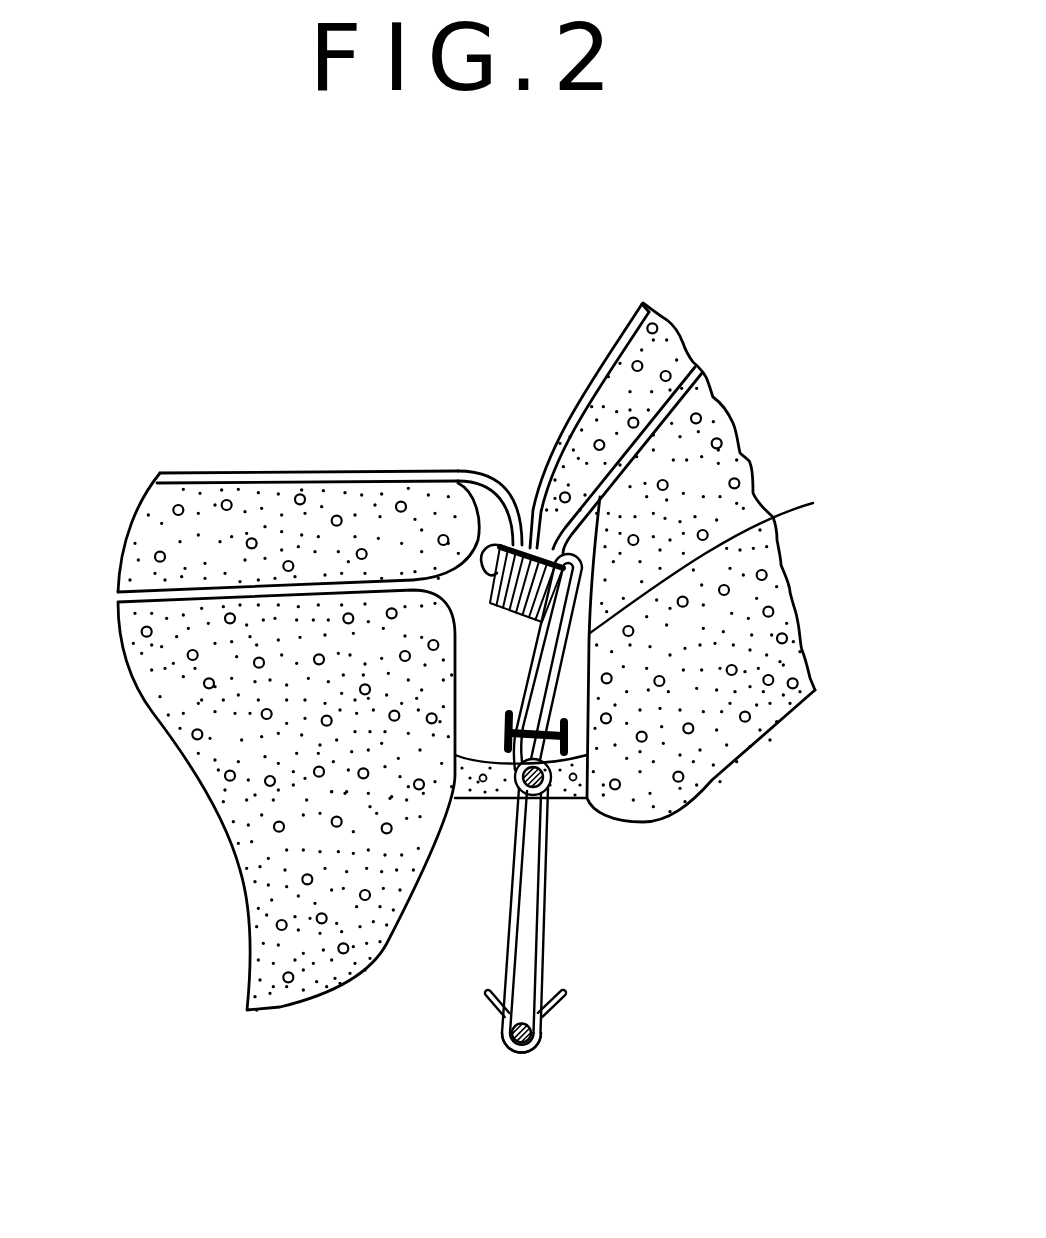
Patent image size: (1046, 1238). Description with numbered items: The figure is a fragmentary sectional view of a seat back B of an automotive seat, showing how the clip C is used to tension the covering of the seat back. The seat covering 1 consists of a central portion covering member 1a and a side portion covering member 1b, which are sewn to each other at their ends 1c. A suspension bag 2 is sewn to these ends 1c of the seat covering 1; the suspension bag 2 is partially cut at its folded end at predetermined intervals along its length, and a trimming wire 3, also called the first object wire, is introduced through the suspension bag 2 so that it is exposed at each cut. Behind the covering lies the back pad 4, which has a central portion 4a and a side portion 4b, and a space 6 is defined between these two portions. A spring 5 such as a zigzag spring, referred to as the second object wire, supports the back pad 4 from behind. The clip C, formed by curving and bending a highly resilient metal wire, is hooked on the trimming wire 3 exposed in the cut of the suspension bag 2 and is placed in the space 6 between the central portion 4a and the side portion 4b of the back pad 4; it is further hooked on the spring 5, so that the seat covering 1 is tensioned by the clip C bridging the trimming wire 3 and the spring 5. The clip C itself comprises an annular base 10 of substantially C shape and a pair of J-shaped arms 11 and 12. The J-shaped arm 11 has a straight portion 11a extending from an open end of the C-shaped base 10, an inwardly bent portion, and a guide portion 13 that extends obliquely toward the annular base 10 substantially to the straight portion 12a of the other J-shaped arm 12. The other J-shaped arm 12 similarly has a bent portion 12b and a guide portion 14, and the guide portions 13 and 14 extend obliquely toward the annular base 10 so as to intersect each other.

The seat covering 1 is at (320, 468).
The central portion covering member 1a is at (213, 470).
The side portion covering member 1b is at (612, 340).
The ends 1c is at (490, 550).
The suspension bag 2 is at (698, 500).
The trimming wire 3 is at (553, 805).
The back pad 4 is at (483, 666).
The central portion 4a is at (153, 713).
The side portion 4b is at (797, 645).
The spring 5 is at (525, 1007).
The space 6 is at (470, 770).
The annular base 10 is at (515, 790).
The J-shaped arm 11 is at (420, 927).
The straight portion 11a is at (512, 933).
The J-shaped arm 12 is at (504, 855).
The straight portion 12a is at (550, 900).
The bent portion 12b is at (507, 1053).
The guide portion 13 is at (557, 1007).
The guide portion 14 is at (500, 1003).
The seat back B is at (742, 420).
The clip C is at (527, 1060).